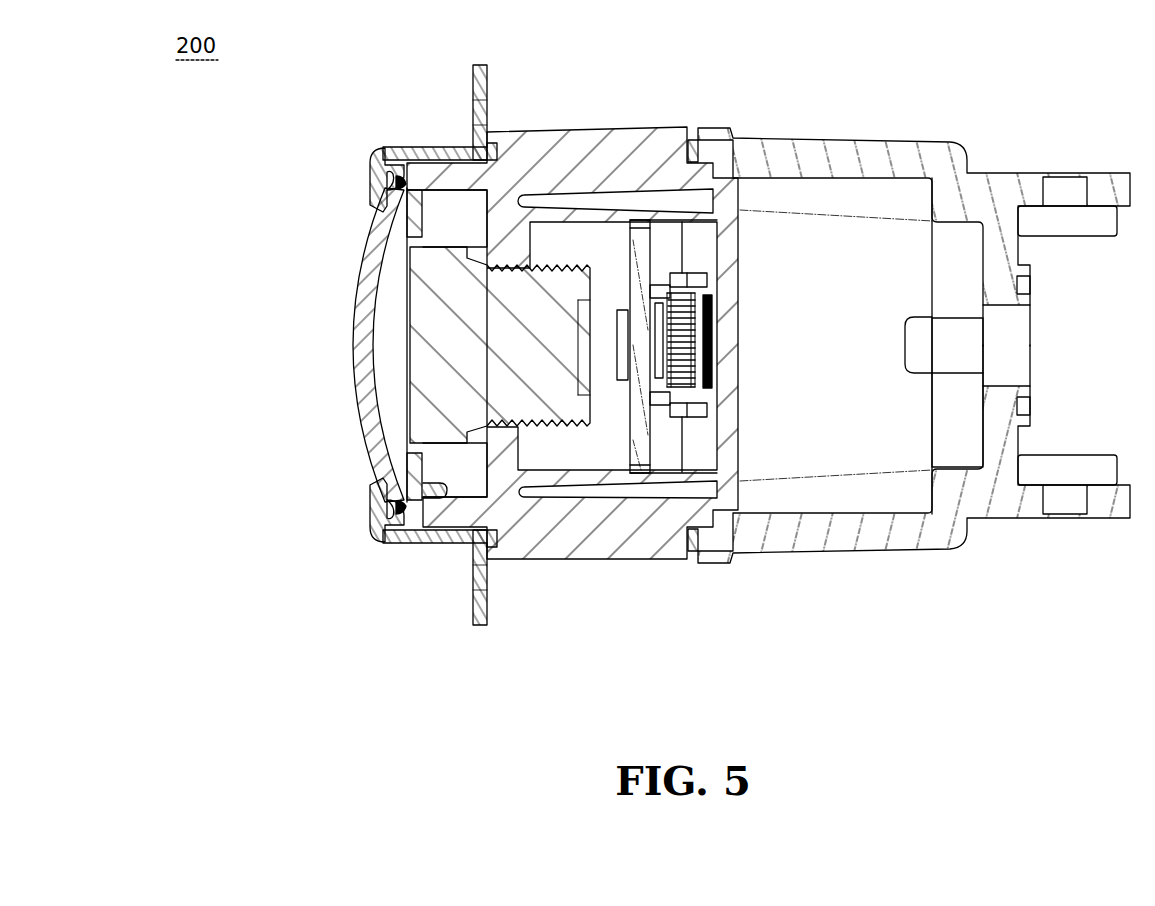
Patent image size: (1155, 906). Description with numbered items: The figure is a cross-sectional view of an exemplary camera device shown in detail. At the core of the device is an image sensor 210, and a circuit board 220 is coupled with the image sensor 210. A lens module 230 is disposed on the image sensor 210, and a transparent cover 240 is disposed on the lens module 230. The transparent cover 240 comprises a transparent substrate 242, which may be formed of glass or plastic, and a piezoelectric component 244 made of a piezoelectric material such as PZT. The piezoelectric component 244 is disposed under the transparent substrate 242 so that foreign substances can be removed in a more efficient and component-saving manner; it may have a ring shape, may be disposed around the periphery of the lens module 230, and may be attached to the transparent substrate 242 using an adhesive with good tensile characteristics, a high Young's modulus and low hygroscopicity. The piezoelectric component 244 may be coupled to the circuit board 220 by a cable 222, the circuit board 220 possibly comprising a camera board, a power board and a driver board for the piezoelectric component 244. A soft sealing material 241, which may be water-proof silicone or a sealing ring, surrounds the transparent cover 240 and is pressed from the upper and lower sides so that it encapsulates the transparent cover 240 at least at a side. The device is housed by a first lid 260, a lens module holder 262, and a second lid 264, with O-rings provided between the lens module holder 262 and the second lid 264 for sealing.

The image sensor 210 is at (620, 380).
The circuit board 220 is at (703, 383).
The cable 222 is at (445, 503).
The lens module 230 is at (483, 447).
The transparent cover 240 is at (299, 345).
The soft sealing material 241 is at (400, 526).
The transparent substrate 242 is at (367, 297).
The piezoelectric component 244 is at (393, 213).
The first lid 260 is at (882, 152).
The lens module holder 262 is at (602, 148).
The second lid 264 is at (374, 156).